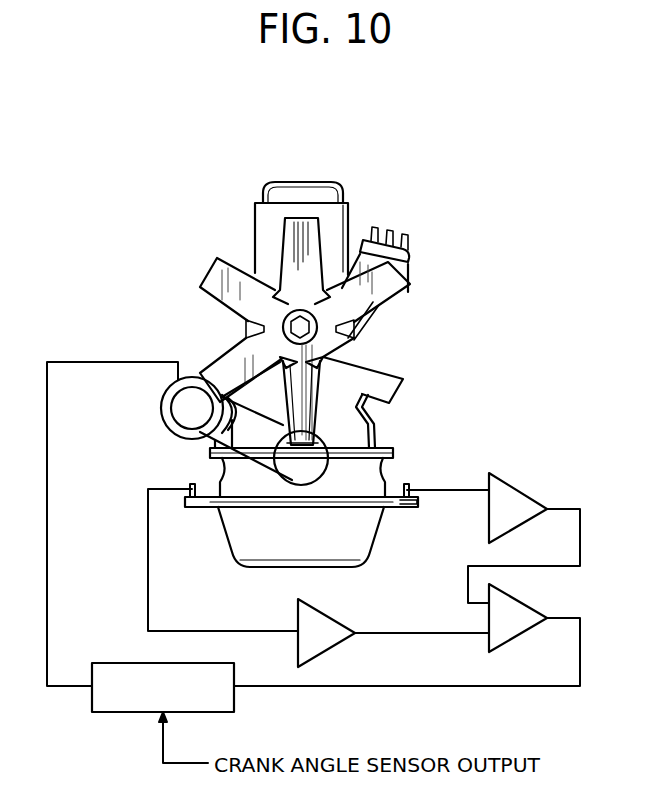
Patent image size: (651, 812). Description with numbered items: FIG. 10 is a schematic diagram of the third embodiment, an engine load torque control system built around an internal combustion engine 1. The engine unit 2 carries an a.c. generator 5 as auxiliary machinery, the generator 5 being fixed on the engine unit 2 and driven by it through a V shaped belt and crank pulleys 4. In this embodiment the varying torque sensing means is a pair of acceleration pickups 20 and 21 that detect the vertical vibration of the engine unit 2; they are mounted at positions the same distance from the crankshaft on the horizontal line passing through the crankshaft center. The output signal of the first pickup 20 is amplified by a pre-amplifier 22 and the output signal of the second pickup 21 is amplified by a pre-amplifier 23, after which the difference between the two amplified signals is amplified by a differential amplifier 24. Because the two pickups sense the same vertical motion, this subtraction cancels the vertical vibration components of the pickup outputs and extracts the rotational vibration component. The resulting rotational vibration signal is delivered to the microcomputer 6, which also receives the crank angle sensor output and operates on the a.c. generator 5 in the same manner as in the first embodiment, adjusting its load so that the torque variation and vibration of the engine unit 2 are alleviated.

The internal combustion engine 1 is at (350, 222).
The engine unit 2 is at (352, 433).
The V shaped belt and crank pulleys 4 is at (197, 436).
The a.c. generator 5 is at (162, 405).
The microcomputer 6 is at (236, 698).
The acceleration pickup 20 is at (407, 484).
The acceleration pickup 21 is at (187, 500).
The pre-amplifier 22 is at (528, 494).
The pre-amplifier 23 is at (340, 621).
The differential amplifier 24 is at (529, 605).